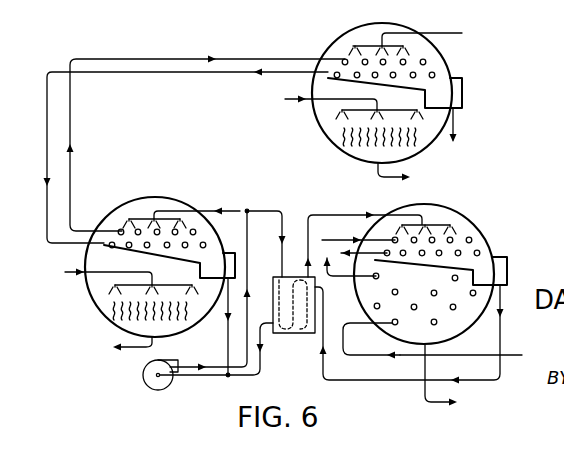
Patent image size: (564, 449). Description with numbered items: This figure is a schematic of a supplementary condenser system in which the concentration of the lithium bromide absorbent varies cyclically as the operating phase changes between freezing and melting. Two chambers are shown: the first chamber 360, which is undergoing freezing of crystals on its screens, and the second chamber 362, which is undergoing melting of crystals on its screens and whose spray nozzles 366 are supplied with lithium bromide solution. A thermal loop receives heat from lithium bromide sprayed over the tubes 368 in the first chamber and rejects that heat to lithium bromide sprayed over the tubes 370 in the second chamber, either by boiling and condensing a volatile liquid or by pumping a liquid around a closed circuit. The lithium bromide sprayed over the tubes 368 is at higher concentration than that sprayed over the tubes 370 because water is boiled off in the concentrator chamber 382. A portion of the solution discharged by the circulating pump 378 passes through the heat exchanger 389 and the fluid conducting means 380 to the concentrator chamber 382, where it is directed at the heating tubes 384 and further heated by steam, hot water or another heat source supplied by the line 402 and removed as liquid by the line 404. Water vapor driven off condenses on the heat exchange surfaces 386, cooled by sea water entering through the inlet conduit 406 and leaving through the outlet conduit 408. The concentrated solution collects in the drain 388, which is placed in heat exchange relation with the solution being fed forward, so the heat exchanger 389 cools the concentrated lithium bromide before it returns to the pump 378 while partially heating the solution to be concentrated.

The first chamber 360 is at (130, 200).
The second chamber 362 is at (335, 42).
The spray nozzles 366 is at (435, 33).
The tubes 368 is at (145, 249).
The tubes 370 is at (428, 61).
The circulating pump 378 is at (145, 380).
The fluid conducting means 380 is at (340, 212).
The concentrator chamber 382 is at (465, 216).
The heating tubes 384 is at (439, 257).
The heat exchange surfaces 386 is at (392, 325).
The drain 388 is at (505, 332).
The heat exchanger 389 is at (290, 337).
The line 402 is at (337, 238).
The line 404 is at (365, 255).
The inlet conduit 406 is at (457, 355).
The outlet conduit 408 is at (345, 278).